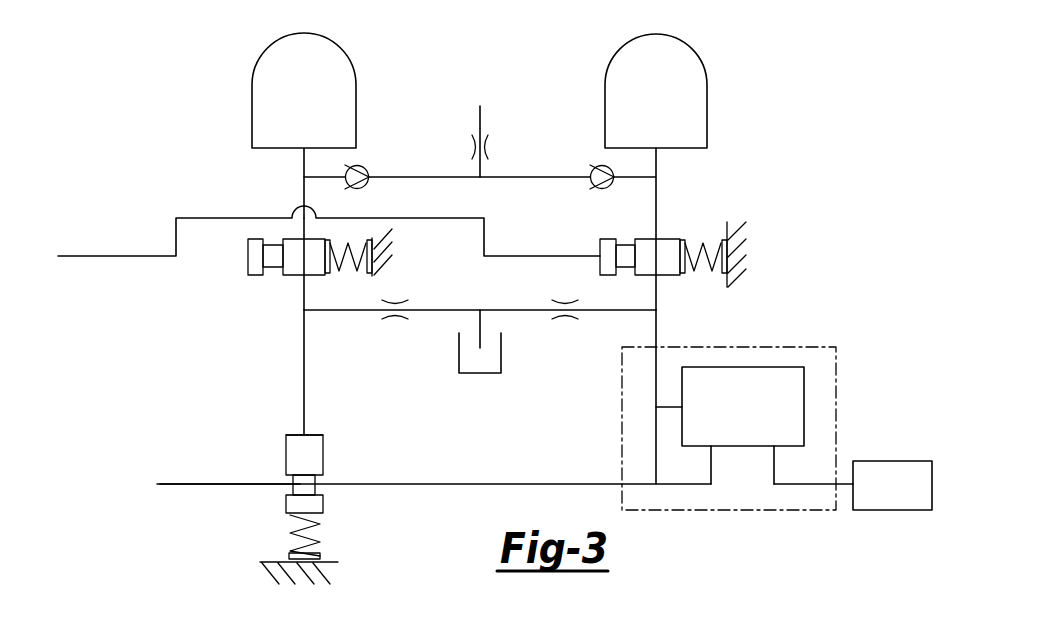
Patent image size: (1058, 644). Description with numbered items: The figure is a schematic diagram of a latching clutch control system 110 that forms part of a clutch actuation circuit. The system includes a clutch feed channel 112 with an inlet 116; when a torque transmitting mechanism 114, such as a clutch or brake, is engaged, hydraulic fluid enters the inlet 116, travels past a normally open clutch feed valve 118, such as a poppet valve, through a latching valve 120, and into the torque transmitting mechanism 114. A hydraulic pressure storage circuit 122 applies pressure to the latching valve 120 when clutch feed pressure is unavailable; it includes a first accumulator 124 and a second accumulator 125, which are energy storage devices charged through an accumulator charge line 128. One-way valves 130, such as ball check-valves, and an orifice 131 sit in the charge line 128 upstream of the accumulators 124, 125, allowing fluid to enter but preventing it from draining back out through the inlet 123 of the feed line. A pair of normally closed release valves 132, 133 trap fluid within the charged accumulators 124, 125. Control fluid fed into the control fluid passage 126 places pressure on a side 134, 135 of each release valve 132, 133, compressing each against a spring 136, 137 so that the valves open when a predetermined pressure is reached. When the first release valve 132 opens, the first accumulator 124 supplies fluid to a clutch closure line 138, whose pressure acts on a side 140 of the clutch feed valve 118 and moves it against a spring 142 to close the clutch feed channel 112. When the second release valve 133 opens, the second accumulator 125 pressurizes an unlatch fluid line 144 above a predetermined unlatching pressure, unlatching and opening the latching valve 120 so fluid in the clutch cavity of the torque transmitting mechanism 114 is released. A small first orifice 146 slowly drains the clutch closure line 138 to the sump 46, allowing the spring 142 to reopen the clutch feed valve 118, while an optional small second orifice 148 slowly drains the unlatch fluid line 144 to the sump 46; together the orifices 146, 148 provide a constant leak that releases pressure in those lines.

The latching clutch control system 110 is at (828, 50).
The clutch feed channel 112 is at (180, 486).
The torque transmitting mechanism 114 is at (905, 499).
The inlet 116 is at (157, 484).
The clutch feed valve 118 is at (323, 440).
The latching valve 120 is at (782, 383).
The hydraulic pressure storage circuit 122 is at (674, 181).
The inlet 123 is at (480, 106).
The first accumulator 124 is at (336, 42).
The second accumulator 125 is at (684, 42).
The control fluid passage 126 is at (93, 256).
The accumulator charge line 128 is at (481, 126).
The one-way valve 130 is at (369, 162).
The orifice 131 is at (500, 152).
The first release valve 132 is at (248, 275).
The second release valve 133 is at (672, 275).
The side of first release valve 134 is at (248, 263).
The side of second release valve 135 is at (600, 267).
The spring 136 is at (353, 273).
The spring 137 is at (695, 240).
The clutch closure line 138 is at (303, 368).
The side of clutch feed valve 140 is at (290, 435).
The spring 142 is at (318, 530).
The unlatch fluid line 144 is at (656, 329).
The first orifice 146 is at (396, 326).
The second orifice 148 is at (565, 328).
The sump 46 is at (501, 360).